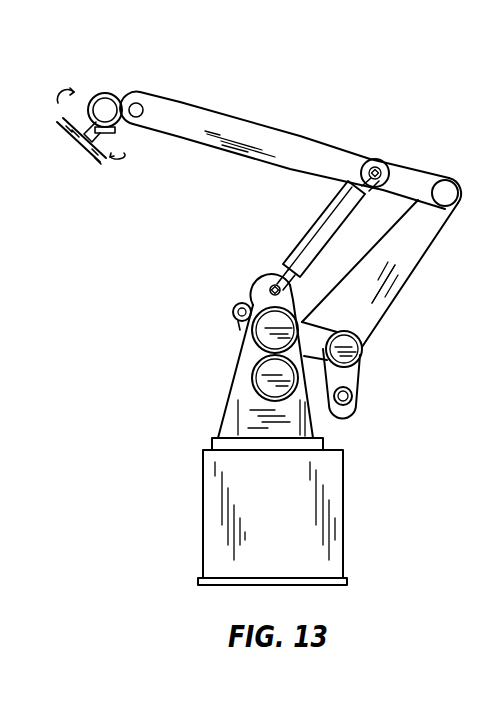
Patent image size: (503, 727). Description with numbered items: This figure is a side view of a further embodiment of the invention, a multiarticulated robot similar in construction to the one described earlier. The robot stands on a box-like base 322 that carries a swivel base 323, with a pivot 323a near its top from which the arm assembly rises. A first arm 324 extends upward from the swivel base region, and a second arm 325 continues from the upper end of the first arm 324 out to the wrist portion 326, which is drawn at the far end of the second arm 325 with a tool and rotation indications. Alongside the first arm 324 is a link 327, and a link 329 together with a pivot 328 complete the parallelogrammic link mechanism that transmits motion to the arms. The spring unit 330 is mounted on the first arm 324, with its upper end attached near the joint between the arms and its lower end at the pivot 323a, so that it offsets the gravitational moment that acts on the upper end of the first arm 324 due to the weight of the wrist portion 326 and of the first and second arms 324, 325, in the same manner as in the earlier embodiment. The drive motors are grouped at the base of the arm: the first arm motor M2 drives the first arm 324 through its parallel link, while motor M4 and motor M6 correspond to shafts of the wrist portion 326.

The base 322 is at (333, 492).
The support column 323 is at (325, 444).
The pivot pin 323a is at (262, 296).
The first arm 324 is at (340, 248).
The second arm 325 is at (307, 157).
The wrist portion 326 is at (122, 132).
The arm link 327 is at (405, 274).
The pivot 328 is at (238, 335).
The link 329 is at (352, 377).
The spring unit 330 is at (325, 218).
The first arm motor M2 is at (258, 378).
The motor M4 is at (266, 328).
The motor M6 is at (352, 350).